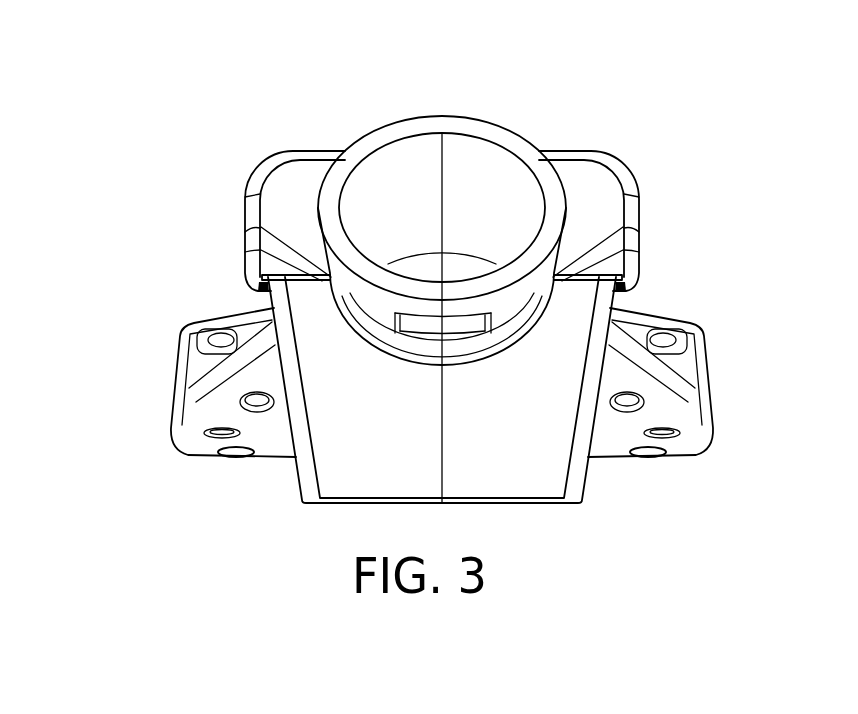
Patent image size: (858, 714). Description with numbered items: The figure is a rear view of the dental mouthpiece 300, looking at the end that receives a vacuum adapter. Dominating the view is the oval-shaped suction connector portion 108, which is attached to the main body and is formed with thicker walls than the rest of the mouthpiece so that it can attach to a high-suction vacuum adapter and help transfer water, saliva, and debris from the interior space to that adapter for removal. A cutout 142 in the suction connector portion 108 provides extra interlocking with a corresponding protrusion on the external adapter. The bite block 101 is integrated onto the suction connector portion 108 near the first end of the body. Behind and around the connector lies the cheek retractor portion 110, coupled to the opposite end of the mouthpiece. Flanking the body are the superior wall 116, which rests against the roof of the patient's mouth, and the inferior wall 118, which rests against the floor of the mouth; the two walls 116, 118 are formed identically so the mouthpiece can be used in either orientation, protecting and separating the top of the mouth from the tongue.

The mounting bracket assembly 300 is at (289, 93).
The suction connector portion 108 is at (452, 116).
The cheek retractor portion 110 is at (592, 153).
The cutout 142 is at (546, 275).
The bite block 101 is at (613, 304).
The superior wall 116 is at (254, 332).
The inferior wall 118 is at (630, 327).